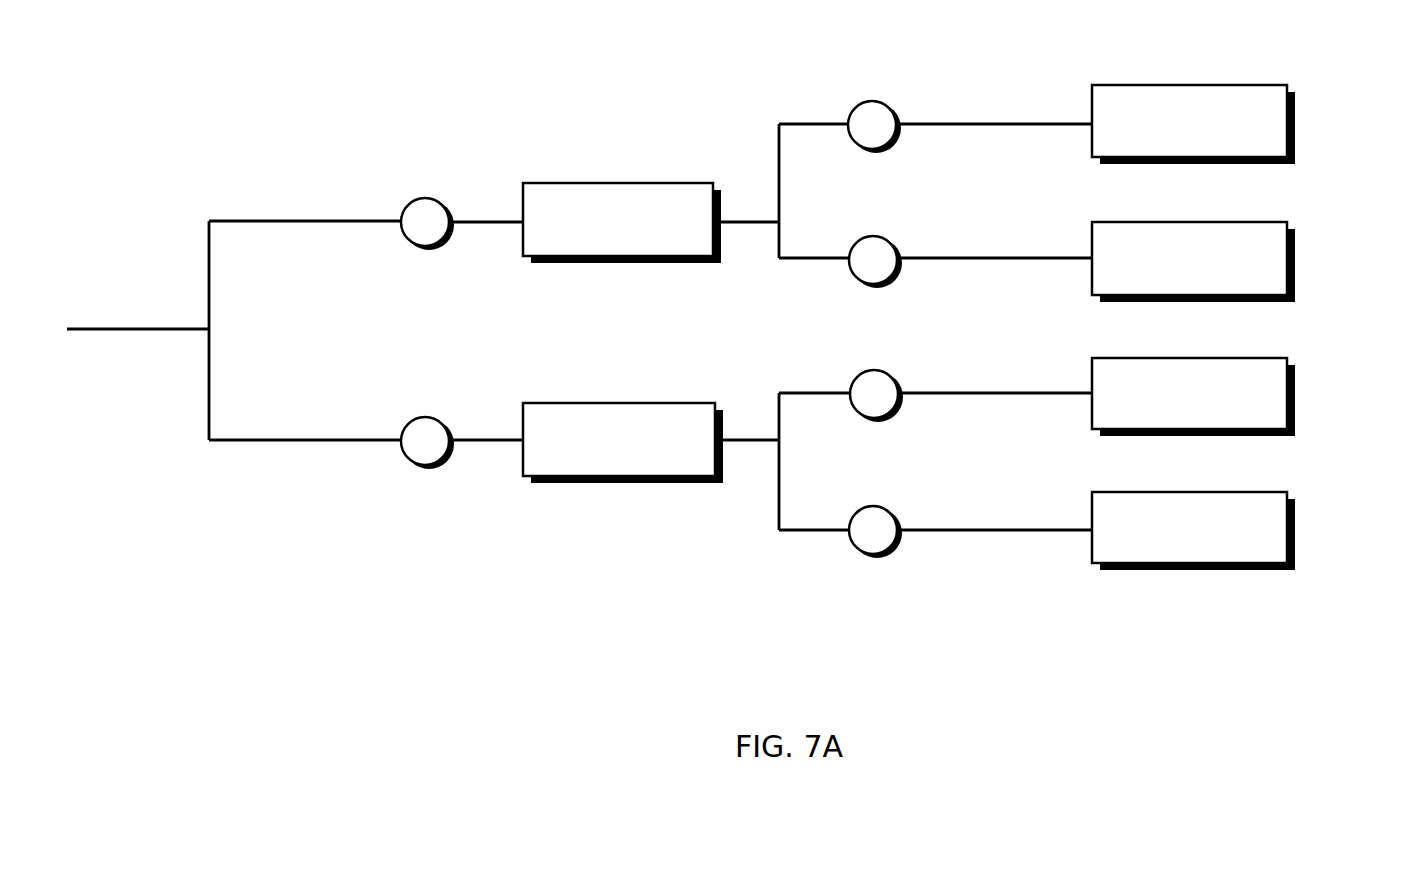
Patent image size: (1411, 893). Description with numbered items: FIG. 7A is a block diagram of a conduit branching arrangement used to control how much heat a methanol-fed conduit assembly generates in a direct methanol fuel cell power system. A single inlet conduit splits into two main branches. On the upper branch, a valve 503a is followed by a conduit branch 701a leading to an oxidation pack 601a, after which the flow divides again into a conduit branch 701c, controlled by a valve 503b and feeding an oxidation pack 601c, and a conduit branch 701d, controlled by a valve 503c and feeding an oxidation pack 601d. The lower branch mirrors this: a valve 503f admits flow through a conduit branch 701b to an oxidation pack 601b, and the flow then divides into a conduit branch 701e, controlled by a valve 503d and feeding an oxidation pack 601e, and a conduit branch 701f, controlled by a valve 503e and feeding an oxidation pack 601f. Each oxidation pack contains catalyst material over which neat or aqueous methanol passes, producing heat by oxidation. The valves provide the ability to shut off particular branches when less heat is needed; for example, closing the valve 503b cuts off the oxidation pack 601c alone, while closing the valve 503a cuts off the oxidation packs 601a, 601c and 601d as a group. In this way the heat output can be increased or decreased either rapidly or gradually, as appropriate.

The valve 503a is at (425, 198).
The valve 503b is at (869, 101).
The valve 503c is at (872, 236).
The valve 503d is at (872, 370).
The valve 503e is at (876, 557).
The valve 503f is at (426, 417).
The oxidation pack 601a is at (578, 184).
The oxidation pack 601b is at (601, 483).
The oxidation pack 601c is at (1293, 118).
The oxidation pack 601d is at (1294, 251).
The oxidation pack 601e is at (1294, 386).
The oxidation pack 601f is at (1294, 515).
The conduit branch 701a is at (478, 223).
The conduit branch 701b is at (490, 442).
The conduit branch 701c is at (975, 124).
The conduit branch 701d is at (983, 258).
The conduit branch 701e is at (983, 394).
The conduit branch 701f is at (985, 531).